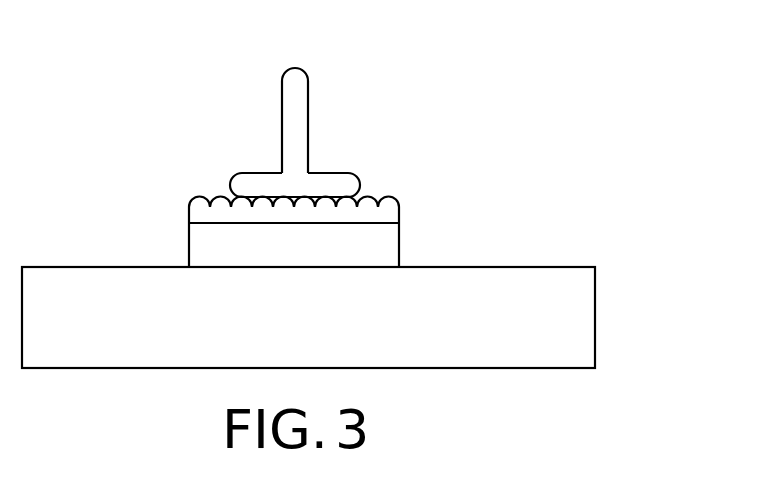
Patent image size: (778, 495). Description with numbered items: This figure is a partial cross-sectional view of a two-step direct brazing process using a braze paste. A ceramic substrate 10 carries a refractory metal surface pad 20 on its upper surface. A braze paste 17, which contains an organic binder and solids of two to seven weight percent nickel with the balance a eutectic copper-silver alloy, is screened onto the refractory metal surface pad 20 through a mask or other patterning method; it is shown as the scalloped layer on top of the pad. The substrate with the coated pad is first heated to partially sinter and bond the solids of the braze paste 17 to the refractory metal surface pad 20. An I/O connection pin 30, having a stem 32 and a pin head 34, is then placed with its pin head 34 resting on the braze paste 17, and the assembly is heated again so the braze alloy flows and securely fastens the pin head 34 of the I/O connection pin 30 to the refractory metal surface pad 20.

The ceramic substrate 10 is at (570, 312).
The refractory metal surface pad 20 is at (382, 251).
The braze paste 17 is at (193, 213).
The I/O connection pin 30 is at (298, 101).
The stem of T-shaped member 32 is at (298, 105).
The pin head 34 is at (250, 179).